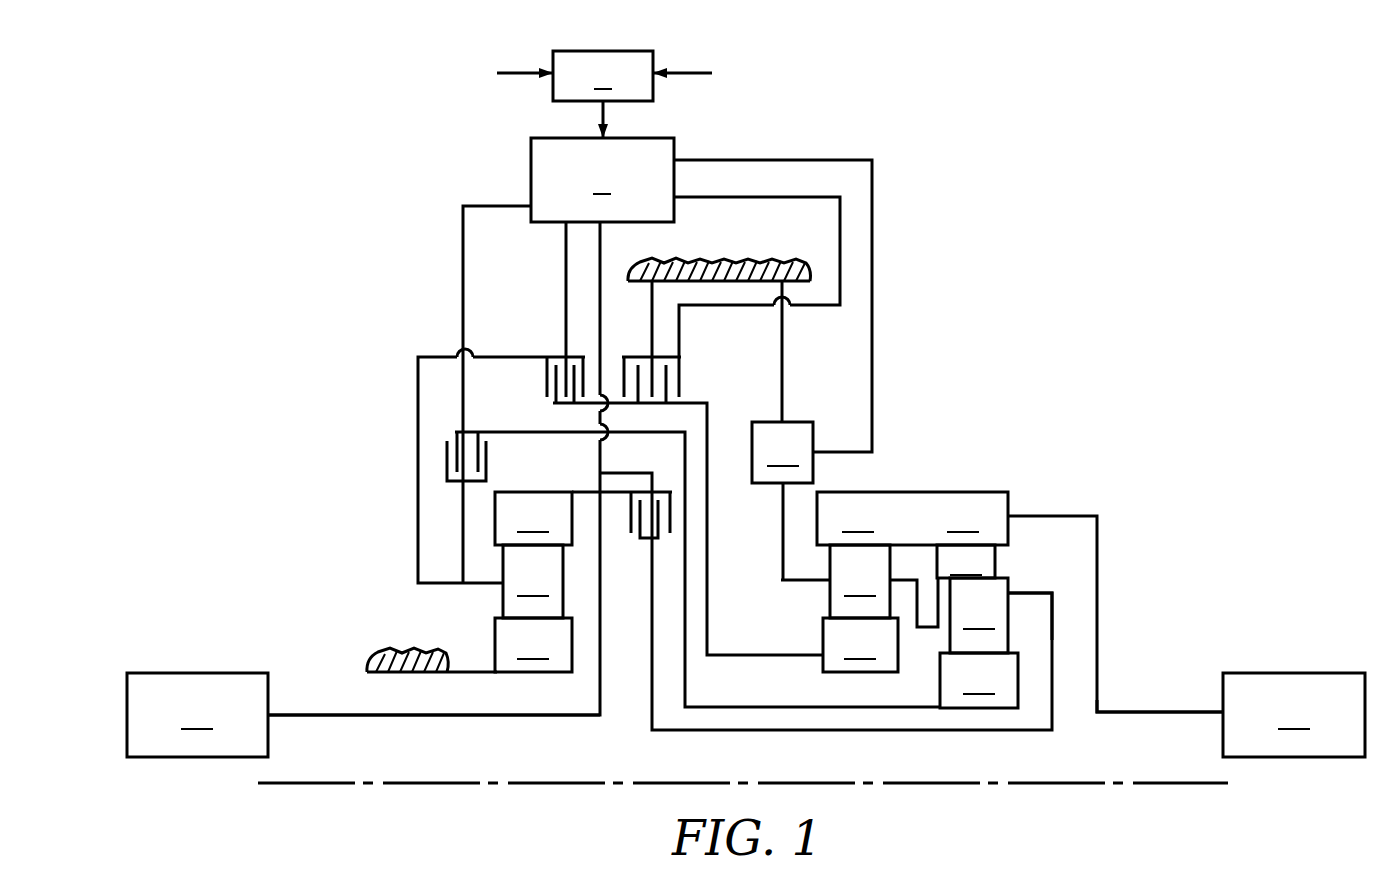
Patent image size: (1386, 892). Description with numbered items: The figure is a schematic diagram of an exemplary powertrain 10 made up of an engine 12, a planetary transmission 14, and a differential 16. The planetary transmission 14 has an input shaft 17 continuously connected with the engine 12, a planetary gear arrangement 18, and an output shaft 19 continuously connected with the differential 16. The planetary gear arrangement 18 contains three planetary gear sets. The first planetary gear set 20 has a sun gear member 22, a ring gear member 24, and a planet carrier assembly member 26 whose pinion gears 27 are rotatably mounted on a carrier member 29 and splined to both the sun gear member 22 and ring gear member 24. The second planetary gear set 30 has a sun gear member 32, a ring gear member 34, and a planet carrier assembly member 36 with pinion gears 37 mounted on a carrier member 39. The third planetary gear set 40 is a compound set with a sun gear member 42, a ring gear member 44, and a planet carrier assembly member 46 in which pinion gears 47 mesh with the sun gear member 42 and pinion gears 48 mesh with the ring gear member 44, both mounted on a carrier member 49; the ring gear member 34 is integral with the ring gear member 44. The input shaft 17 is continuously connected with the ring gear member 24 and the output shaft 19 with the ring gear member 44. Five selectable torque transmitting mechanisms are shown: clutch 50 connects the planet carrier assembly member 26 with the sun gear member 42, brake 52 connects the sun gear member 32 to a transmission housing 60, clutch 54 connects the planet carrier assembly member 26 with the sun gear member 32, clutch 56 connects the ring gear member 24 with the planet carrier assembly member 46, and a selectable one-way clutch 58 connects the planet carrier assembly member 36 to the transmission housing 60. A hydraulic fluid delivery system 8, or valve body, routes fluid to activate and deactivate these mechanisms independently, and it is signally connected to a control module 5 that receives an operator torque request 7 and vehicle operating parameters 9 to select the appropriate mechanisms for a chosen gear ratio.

The control module 5 is at (603, 94).
The operator torque request 7 is at (494, 89).
The vehicle operating parameters 9 is at (730, 89).
The hydraulic fluid delivery system 8 is at (602, 180).
The powertrain 10 is at (258, 480).
The engine 12 is at (197, 715).
The planetary transmission 14 is at (913, 408).
The differential 16 is at (1294, 715).
The input shaft 17 is at (335, 716).
The planetary gear arrangement 18 is at (957, 432).
The output shaft 19 is at (1160, 712).
The first planetary gear set 20 is at (509, 631).
The sun gear member 22 is at (520, 675).
The ring gear member 24 is at (533, 518).
The planet carrier assembly member 26 is at (492, 562).
The pinion gears 27 is at (533, 581).
The carrier member 29 is at (475, 584).
The second planetary gear set 30 is at (837, 633).
The sun gear member 32 is at (840, 675).
The ring gear member 34 is at (864, 518).
The planet carrier assembly member 36 is at (818, 572).
The pinion gears 37 is at (860, 581).
The carrier member 39 is at (806, 583).
The third planetary gear set 40 is at (956, 632).
The sun gear member 42 is at (970, 710).
The ring gear member 44 is at (960, 518).
The planet carrier assembly member 46 is at (1022, 582).
The pinion gears 47 is at (979, 615).
The pinion gears 48 is at (966, 561).
The carrier member 49 is at (1038, 595).
The clutch 50 is at (447, 460).
The brake 52 is at (688, 366).
The clutch 54 is at (545, 375).
The clutch 56 is at (640, 548).
The selectable one-way clutch 58 is at (782, 452).
The transmission housing 60 is at (688, 265).